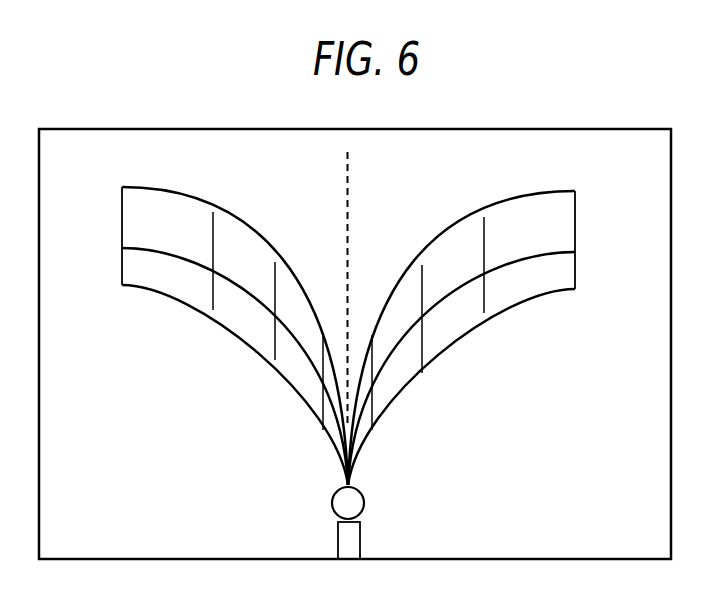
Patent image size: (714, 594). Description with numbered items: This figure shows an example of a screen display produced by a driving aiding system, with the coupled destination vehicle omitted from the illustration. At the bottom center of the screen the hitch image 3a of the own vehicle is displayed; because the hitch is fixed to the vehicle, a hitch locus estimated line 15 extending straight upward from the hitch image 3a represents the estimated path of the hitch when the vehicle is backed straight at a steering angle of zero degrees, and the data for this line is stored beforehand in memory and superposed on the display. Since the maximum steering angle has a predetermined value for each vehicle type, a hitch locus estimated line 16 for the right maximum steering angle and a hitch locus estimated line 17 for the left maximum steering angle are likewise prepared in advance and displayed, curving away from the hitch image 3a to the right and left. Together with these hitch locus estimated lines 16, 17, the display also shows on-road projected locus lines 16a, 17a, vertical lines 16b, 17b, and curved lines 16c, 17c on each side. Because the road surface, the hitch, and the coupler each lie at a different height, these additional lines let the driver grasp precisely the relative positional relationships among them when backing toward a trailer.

The hitch locus estimated line 15 is at (347, 170).
The hitch image 3a is at (364, 501).
The hitch locus estimated line 16 is at (461, 332).
The on-road projected locus line 16a is at (466, 325).
The vertical lines 16b is at (573, 264).
The curved line 16c is at (453, 222).
The hitch locus estimated line 17 is at (235, 328).
The on-road projected locus line 17a is at (186, 301).
The vertical lines 17b is at (218, 296).
The curved line 17c is at (241, 216).